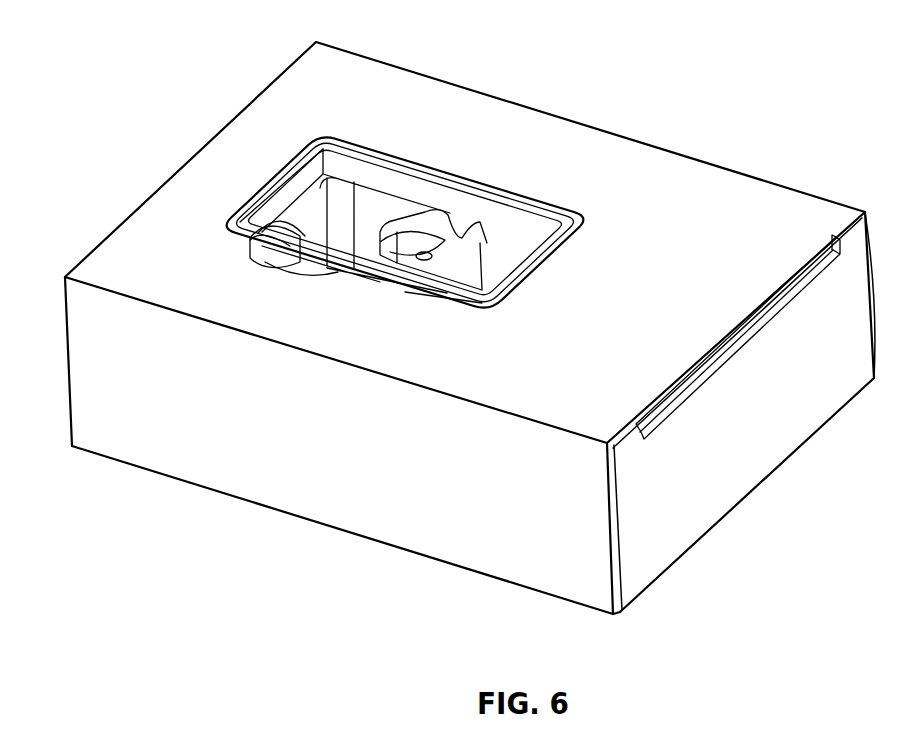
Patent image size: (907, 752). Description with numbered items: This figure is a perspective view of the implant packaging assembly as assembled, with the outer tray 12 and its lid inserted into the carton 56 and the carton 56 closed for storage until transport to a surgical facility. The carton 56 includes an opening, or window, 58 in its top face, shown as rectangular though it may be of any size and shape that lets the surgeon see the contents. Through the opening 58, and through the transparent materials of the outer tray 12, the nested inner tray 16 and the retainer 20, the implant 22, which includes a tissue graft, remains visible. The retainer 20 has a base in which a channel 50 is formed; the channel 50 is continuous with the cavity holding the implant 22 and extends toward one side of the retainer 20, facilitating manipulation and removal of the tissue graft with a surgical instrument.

The outer tray 12 is at (333, 165).
The inner tray 16 is at (290, 212).
The retainer 20 is at (282, 238).
The implant 22 is at (403, 248).
The channel 50 is at (464, 220).
The carton 56 is at (733, 170).
The opening 58 is at (561, 226).